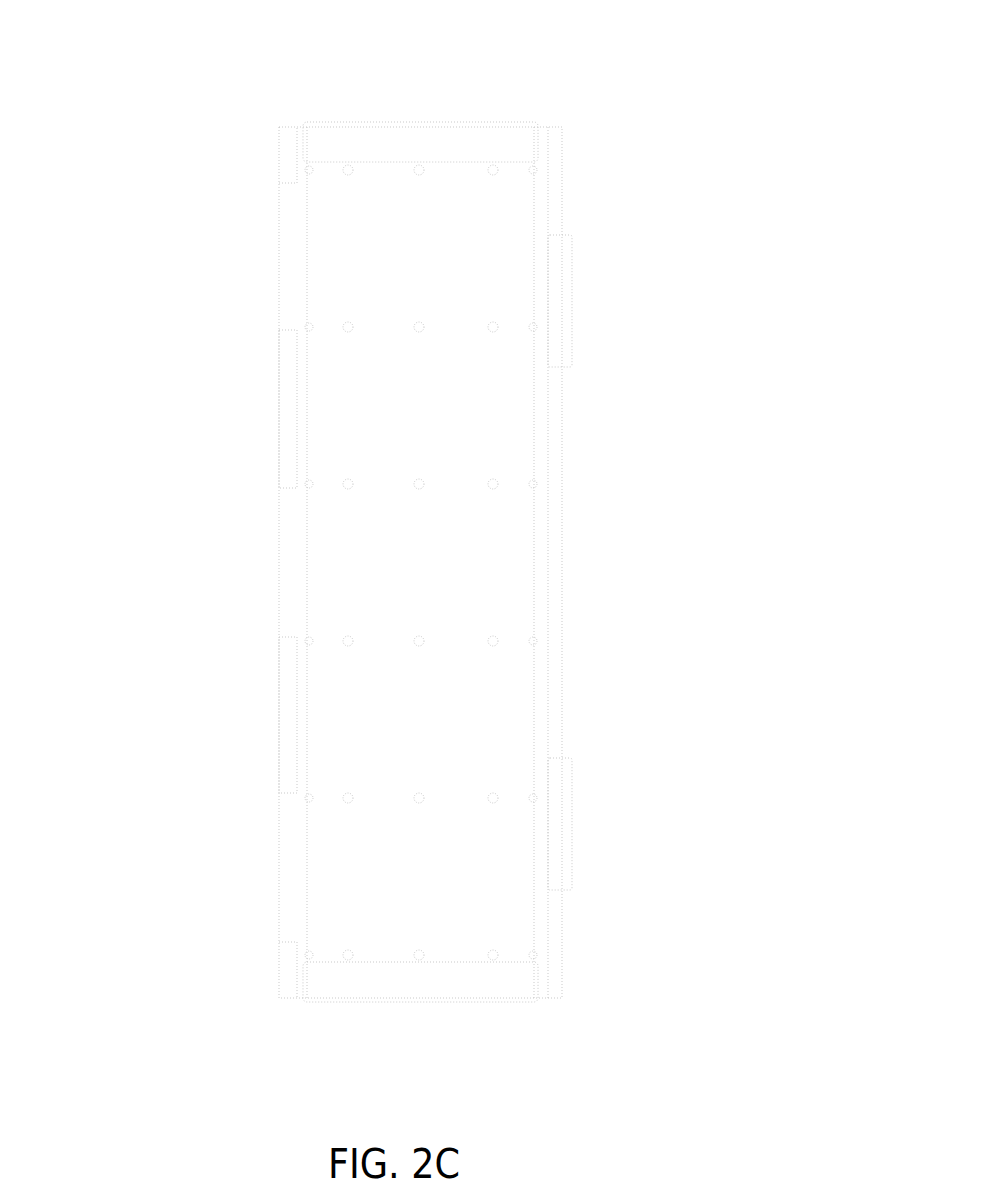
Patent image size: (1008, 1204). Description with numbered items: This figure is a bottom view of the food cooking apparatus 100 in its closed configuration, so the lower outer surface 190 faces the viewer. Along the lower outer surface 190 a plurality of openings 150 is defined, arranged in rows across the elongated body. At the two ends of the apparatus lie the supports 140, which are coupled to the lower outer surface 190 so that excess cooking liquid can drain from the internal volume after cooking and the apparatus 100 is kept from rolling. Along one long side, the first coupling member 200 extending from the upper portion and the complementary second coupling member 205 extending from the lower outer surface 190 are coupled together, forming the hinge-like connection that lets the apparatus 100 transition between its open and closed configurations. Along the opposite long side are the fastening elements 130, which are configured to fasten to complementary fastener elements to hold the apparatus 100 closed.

The food cooking apparatus 100 is at (170, 60).
The fastening element 130 is at (570, 279).
The support 140 is at (510, 127).
The opening 150 is at (347, 165).
The lower outer surface 190 is at (500, 243).
The first coupling member 200 is at (278, 270).
The second coupling member 205 is at (278, 440).